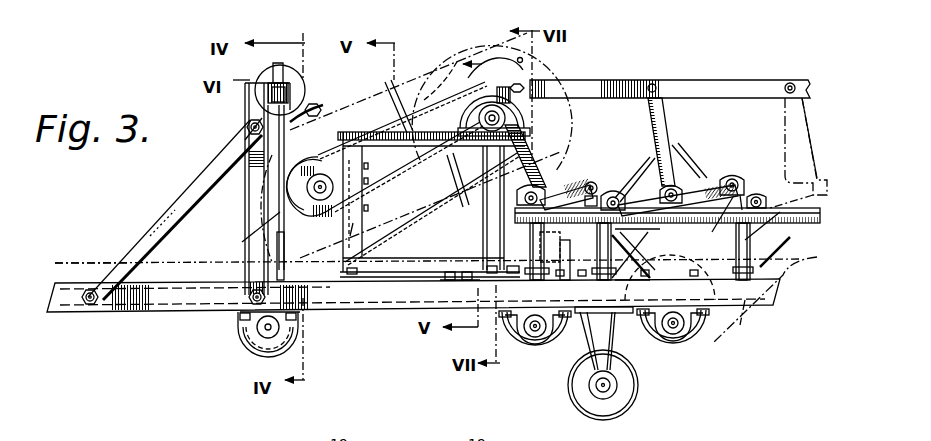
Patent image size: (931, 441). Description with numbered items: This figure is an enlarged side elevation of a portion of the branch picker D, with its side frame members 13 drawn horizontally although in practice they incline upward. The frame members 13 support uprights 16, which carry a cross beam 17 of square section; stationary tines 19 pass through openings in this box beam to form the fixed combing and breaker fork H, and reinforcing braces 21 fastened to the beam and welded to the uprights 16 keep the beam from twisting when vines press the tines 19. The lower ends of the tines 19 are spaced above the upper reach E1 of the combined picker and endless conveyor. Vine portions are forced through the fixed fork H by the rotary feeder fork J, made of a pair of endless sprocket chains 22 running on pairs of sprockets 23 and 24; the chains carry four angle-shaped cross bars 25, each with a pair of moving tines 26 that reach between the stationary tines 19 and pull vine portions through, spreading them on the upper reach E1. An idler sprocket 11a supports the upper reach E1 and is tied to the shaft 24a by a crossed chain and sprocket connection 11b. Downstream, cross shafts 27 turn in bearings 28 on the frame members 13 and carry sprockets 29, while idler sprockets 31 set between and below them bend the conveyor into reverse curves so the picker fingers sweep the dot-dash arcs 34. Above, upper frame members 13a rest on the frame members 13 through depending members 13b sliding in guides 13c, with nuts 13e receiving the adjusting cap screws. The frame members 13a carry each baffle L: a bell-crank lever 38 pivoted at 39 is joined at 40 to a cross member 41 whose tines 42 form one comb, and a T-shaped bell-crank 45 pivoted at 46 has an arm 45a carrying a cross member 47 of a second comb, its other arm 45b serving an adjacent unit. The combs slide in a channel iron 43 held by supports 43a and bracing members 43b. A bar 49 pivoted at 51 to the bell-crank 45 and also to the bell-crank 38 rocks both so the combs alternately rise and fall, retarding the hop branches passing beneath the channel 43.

The idler sprocket 11a is at (243, 352).
The crossed chain and sprocket connection 11b is at (437, 80).
The frame members 13 is at (188, 305).
The upper frame members 13a is at (774, 207).
The depending members 13b is at (503, 242).
The guides 13c is at (478, 272).
The nuts 13e is at (561, 260).
The uprights 16 is at (248, 196).
The cross beam 17 is at (294, 88).
The tines 19 is at (280, 63).
The reinforcing braces 21 is at (312, 106).
The endless sprocket chains 22 is at (378, 116).
The sprockets 23 is at (431, 204).
The sprockets 24 is at (492, 54).
The shaft 24a is at (530, 120).
The cross bars 25 is at (420, 220).
The tines 26 is at (390, 82).
The cross shafts 27 is at (522, 330).
The bearings 28 is at (530, 334).
The sprockets 29 is at (530, 363).
The idler sprockets 31 is at (592, 402).
The arcs 34 is at (680, 264).
The bell-crank lever 38 is at (540, 160).
The pivot 39 is at (546, 186).
The pivotal connection 40 is at (586, 192).
The cross member 41 is at (649, 218).
The tines 42 is at (605, 243).
The channel iron 43 is at (588, 322).
The supports 43a is at (632, 269).
The bracing members 43b is at (628, 232).
The T-shaped bell-crank 45 is at (787, 120).
The arm 45a is at (650, 178).
The arm 45b is at (722, 178).
The pivot point 46 is at (685, 183).
The cross member 47 is at (635, 255).
The bar 49 is at (746, 74).
The pivot 51 is at (653, 82).
The branch picker D is at (722, 82).
The upper reach E1 is at (91, 262).
The stationary breaker fork H is at (262, 201).
The direction indicator I is at (597, 272).
The rotary feeder fork J is at (427, 100).
The baffle L is at (761, 266).